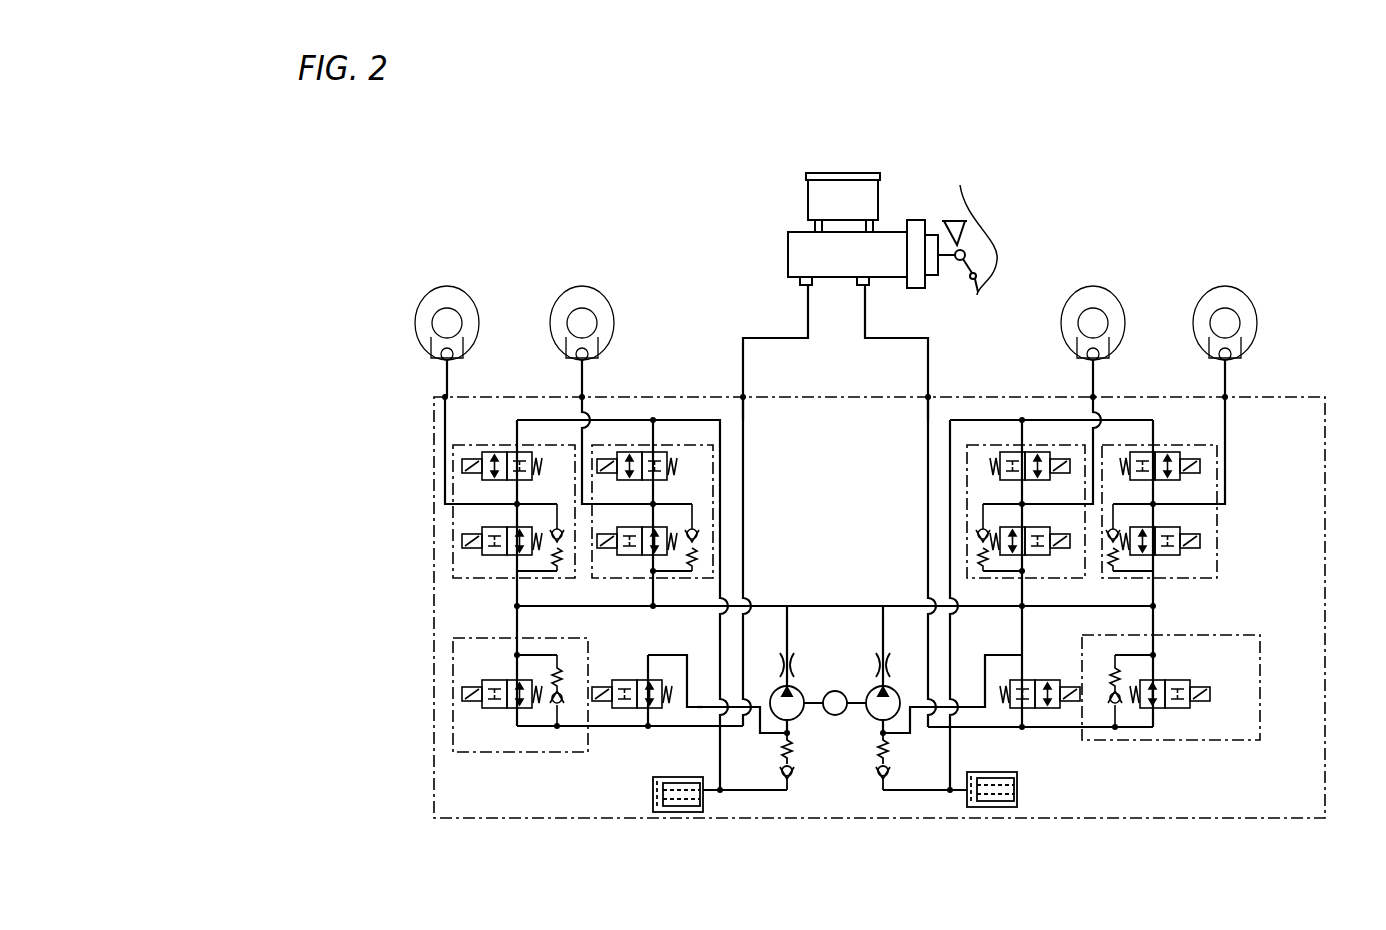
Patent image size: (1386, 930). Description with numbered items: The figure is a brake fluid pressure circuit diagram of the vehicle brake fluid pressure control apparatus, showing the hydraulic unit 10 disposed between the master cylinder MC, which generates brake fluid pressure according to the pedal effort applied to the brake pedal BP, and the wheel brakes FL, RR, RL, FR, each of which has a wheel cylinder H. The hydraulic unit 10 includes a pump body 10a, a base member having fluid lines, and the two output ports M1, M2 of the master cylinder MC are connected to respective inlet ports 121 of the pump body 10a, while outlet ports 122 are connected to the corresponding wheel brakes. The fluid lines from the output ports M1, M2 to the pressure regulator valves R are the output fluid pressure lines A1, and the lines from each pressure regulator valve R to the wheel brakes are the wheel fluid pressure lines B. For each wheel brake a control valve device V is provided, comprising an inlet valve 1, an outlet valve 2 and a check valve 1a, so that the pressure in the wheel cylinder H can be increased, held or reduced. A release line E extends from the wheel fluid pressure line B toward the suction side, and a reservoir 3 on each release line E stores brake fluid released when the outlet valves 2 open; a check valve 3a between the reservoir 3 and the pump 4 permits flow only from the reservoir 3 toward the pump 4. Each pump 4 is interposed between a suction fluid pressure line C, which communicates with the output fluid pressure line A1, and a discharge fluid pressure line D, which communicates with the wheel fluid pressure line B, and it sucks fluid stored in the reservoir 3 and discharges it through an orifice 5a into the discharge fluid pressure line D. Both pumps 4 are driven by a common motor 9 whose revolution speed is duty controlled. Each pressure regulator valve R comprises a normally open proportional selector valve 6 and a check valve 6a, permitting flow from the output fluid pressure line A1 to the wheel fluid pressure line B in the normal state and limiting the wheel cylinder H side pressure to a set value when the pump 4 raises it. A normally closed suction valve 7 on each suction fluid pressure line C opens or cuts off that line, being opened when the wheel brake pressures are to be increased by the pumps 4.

The inlet valve 1 is at (1203, 560).
The check valve 1a is at (558, 524).
The outlet valve 2 is at (490, 452).
The reservoir 3 is at (652, 795).
The check valve 3a is at (794, 775).
The pump 4 is at (797, 716).
The orifice 5a is at (790, 666).
The selector valve 6 is at (487, 707).
The check valve 6a is at (563, 698).
The suction valve 7 is at (612, 678).
The motor 9 is at (832, 693).
The hydraulic unit 10 is at (985, 364).
The pump body 10a is at (555, 818).
The inlet port 121 is at (744, 395).
The outlet port 122 is at (1222, 396).
The output fluid pressure line A1 is at (1036, 755).
The wheel fluid pressure line B is at (445, 420).
The suction fluid pressure line C is at (697, 708).
The discharge fluid pressure line D is at (903, 590).
The release line E is at (668, 420).
The control valve device V is at (453, 520).
The pressure regulator valve R is at (520, 752).
The wheel cylinder H is at (462, 342).
The master cylinder MC is at (802, 253).
The output port M1 is at (800, 284).
The output port M2 is at (868, 284).
The brake pedal BP is at (958, 215).
The wheel brake FL is at (436, 294).
The wheel brake RR is at (585, 291).
The wheel brake RL is at (1089, 292).
The wheel brake FR is at (1222, 292).